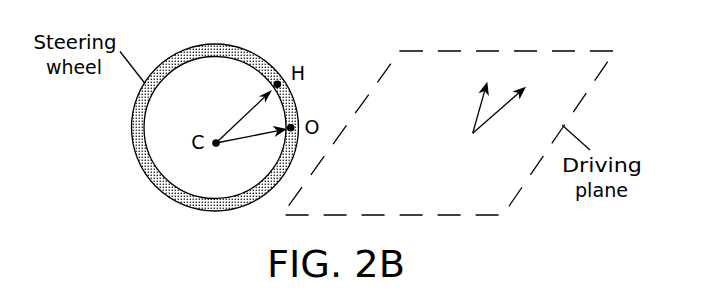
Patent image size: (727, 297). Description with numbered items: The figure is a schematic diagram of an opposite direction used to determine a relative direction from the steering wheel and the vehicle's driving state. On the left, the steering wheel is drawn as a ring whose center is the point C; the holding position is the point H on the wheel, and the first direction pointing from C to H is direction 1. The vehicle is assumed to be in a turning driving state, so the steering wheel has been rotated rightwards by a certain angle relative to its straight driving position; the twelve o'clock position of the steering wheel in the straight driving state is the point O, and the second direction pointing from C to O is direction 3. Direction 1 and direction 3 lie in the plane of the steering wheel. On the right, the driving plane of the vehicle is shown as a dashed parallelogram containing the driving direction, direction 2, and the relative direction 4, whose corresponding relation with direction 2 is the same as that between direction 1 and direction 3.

The direction 1 is at (244, 116).
The direction 2 is at (508, 105).
The direction 3 is at (251, 142).
The relative direction 4 is at (477, 98).